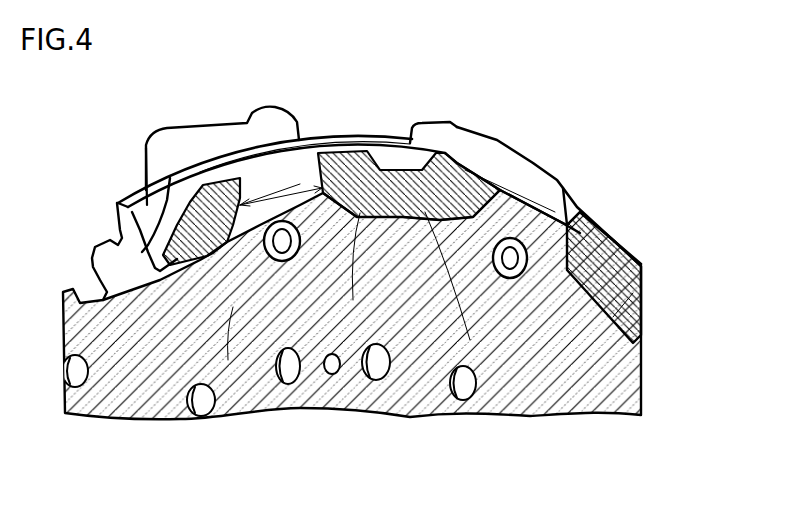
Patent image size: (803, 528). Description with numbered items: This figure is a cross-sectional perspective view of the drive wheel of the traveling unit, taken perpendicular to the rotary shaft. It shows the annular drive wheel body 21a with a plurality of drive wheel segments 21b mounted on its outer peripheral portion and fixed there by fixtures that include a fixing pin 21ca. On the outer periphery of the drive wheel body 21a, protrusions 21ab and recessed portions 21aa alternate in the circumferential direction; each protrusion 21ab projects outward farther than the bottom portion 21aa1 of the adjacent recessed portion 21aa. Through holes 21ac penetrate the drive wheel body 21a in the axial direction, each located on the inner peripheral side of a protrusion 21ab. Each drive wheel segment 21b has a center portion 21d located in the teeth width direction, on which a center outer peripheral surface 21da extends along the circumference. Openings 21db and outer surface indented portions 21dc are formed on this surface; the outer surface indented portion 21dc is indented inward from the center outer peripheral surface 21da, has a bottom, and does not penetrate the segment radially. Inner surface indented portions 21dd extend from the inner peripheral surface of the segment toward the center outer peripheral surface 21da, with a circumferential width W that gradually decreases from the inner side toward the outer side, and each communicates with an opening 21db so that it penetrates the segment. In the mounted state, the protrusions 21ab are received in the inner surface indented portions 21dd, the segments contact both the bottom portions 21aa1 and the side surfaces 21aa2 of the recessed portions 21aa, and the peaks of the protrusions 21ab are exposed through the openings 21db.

The drive wheel body 21a is at (260, 367).
The recessed portion 21aa is at (150, 285).
The bottom portion 21aa1 is at (470, 340).
The side surface 21aa2 is at (360, 213).
The through hole 21ac is at (233, 307).
The drive wheel segment 21b is at (580, 230).
The protrusion 21ab is at (292, 182).
The fixing pin 21ca is at (330, 217).
The center portion 21d is at (162, 182).
The center outer peripheral surface 21da is at (207, 177).
The opening 21db is at (246, 170).
The outer surface indented portion 21dc is at (405, 167).
The inner surface indented portion 21dd is at (240, 231).
The width W is at (283, 180).